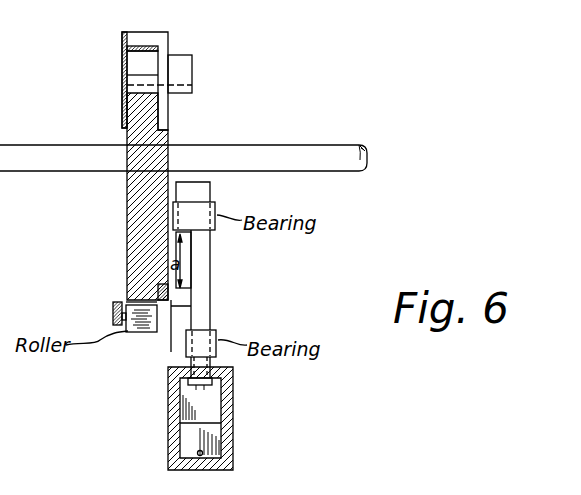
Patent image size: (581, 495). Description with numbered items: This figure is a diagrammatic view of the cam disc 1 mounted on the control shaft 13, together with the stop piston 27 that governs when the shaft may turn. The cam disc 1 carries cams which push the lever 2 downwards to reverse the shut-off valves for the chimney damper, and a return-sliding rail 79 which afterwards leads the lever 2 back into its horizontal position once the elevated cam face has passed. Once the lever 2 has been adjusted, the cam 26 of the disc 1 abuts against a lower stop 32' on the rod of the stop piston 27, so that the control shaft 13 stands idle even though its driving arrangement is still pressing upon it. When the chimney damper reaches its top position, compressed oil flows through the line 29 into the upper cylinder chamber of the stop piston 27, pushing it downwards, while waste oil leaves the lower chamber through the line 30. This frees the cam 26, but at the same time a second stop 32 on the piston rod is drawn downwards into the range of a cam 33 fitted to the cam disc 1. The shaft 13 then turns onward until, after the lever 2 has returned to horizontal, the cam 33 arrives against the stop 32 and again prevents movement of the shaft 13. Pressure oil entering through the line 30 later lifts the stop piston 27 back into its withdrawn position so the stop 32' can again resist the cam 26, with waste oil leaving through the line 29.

The cam disc 1 is at (126, 207).
The lever 2 is at (113, 305).
The control shaft 13 is at (230, 157).
The cam 26 is at (171, 330).
The stop piston 27 is at (208, 400).
The line 29 is at (188, 396).
The line 30 is at (198, 452).
The second stop 32 is at (221, 256).
The lower stop 32' is at (228, 333).
The cam 33 is at (183, 75).
The return-sliding rail 79 is at (121, 57).